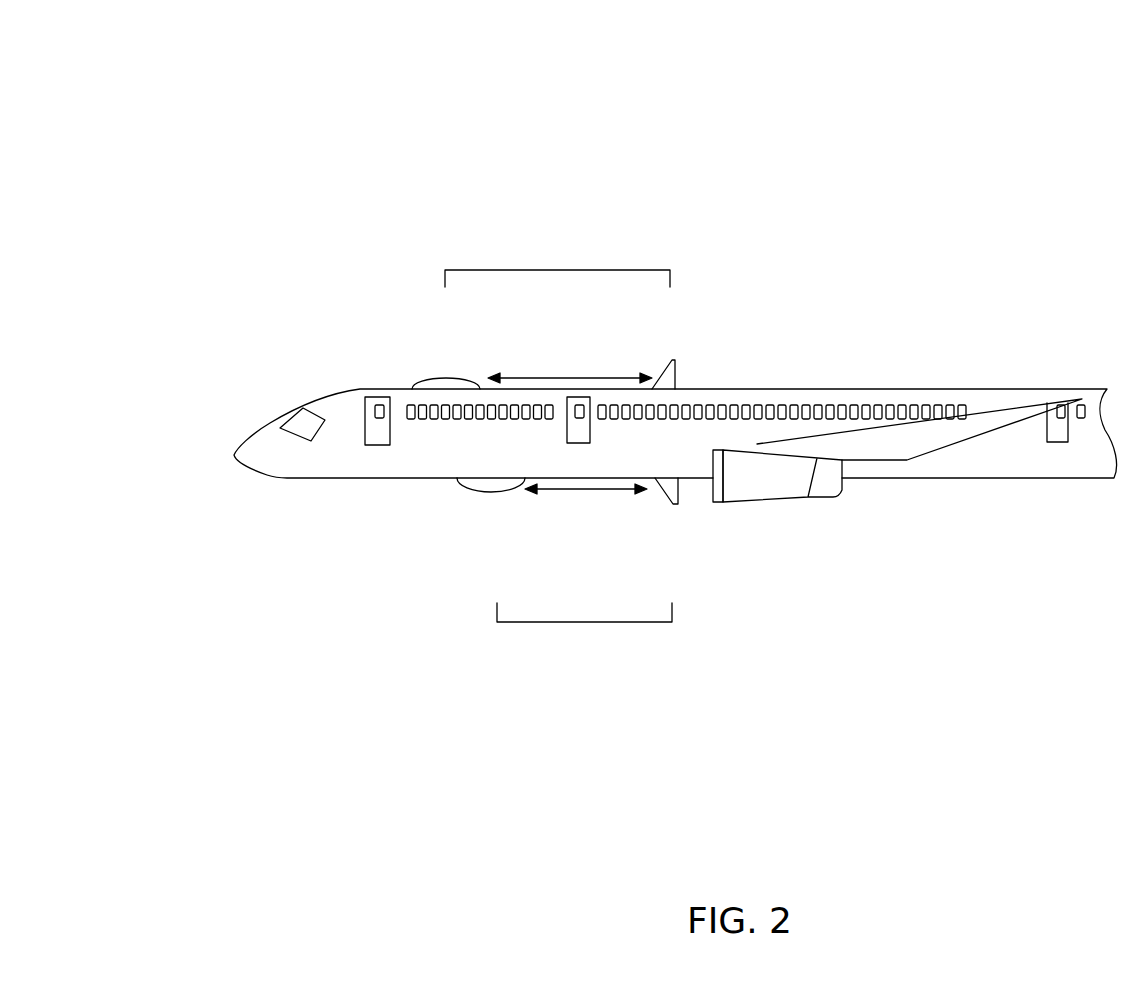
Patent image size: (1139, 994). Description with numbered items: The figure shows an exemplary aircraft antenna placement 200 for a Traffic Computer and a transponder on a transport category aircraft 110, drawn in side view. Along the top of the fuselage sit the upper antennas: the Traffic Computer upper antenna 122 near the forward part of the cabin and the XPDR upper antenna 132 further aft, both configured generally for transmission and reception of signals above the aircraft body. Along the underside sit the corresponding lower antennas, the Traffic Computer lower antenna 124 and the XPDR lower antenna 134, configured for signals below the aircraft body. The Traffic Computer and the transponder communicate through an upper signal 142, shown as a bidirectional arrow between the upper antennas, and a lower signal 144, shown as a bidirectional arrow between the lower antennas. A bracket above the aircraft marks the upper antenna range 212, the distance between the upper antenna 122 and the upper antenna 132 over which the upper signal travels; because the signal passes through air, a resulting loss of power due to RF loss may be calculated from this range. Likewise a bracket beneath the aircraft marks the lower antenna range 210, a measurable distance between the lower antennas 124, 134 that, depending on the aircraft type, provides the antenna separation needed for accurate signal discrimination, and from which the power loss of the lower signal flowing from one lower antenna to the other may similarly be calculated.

The aircraft antenna placement 200 is at (586, 349).
The transport category aircraft 110 is at (338, 389).
The Traffic Computer upper antenna 122 is at (425, 380).
The Traffic Computer lower antenna 124 is at (470, 493).
The XPDR upper antenna 132 is at (673, 360).
The XPDR lower antenna 134 is at (675, 505).
The upper signal 142 is at (568, 377).
The lower signal 144 is at (565, 492).
The lower antenna range 210 is at (585, 622).
The upper antenna range 212 is at (558, 270).